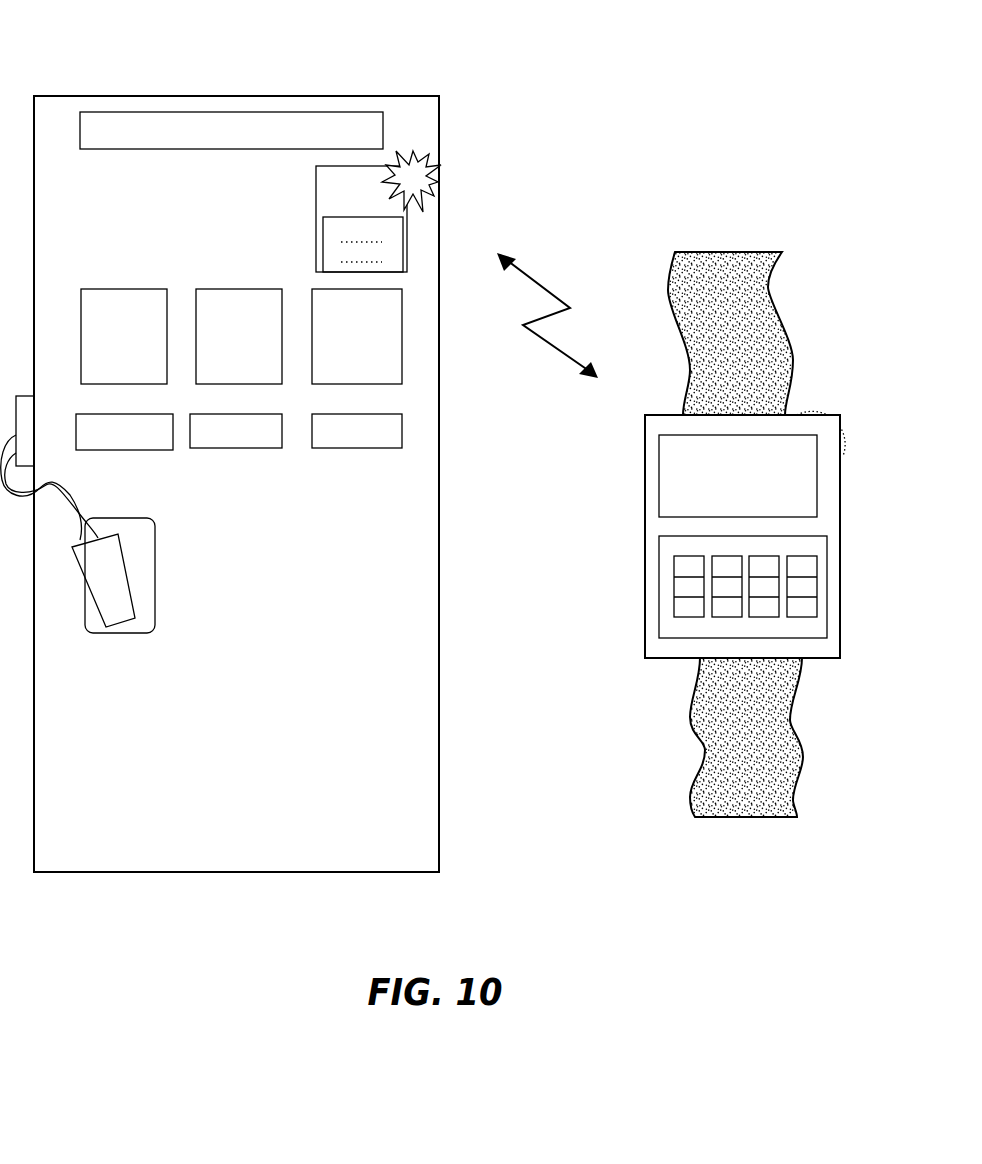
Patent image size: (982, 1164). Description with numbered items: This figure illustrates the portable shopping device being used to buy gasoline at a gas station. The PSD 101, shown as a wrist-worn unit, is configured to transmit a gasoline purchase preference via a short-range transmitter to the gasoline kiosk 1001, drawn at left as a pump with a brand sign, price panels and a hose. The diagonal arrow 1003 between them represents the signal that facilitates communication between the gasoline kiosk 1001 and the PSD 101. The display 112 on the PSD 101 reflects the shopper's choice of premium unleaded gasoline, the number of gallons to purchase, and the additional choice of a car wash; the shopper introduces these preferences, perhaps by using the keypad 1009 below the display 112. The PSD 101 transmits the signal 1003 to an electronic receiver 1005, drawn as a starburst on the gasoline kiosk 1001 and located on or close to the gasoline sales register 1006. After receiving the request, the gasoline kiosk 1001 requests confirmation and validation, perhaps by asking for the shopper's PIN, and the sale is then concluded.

The gasoline kiosk 1001 is at (140, 97).
The electronic receiver 1005 is at (437, 170).
The gasoline sales register 1006 is at (405, 257).
The signal 1003 is at (540, 290).
The portable shopping device 101 is at (645, 527).
The display 112 is at (663, 492).
The keypad 1009 is at (678, 600).